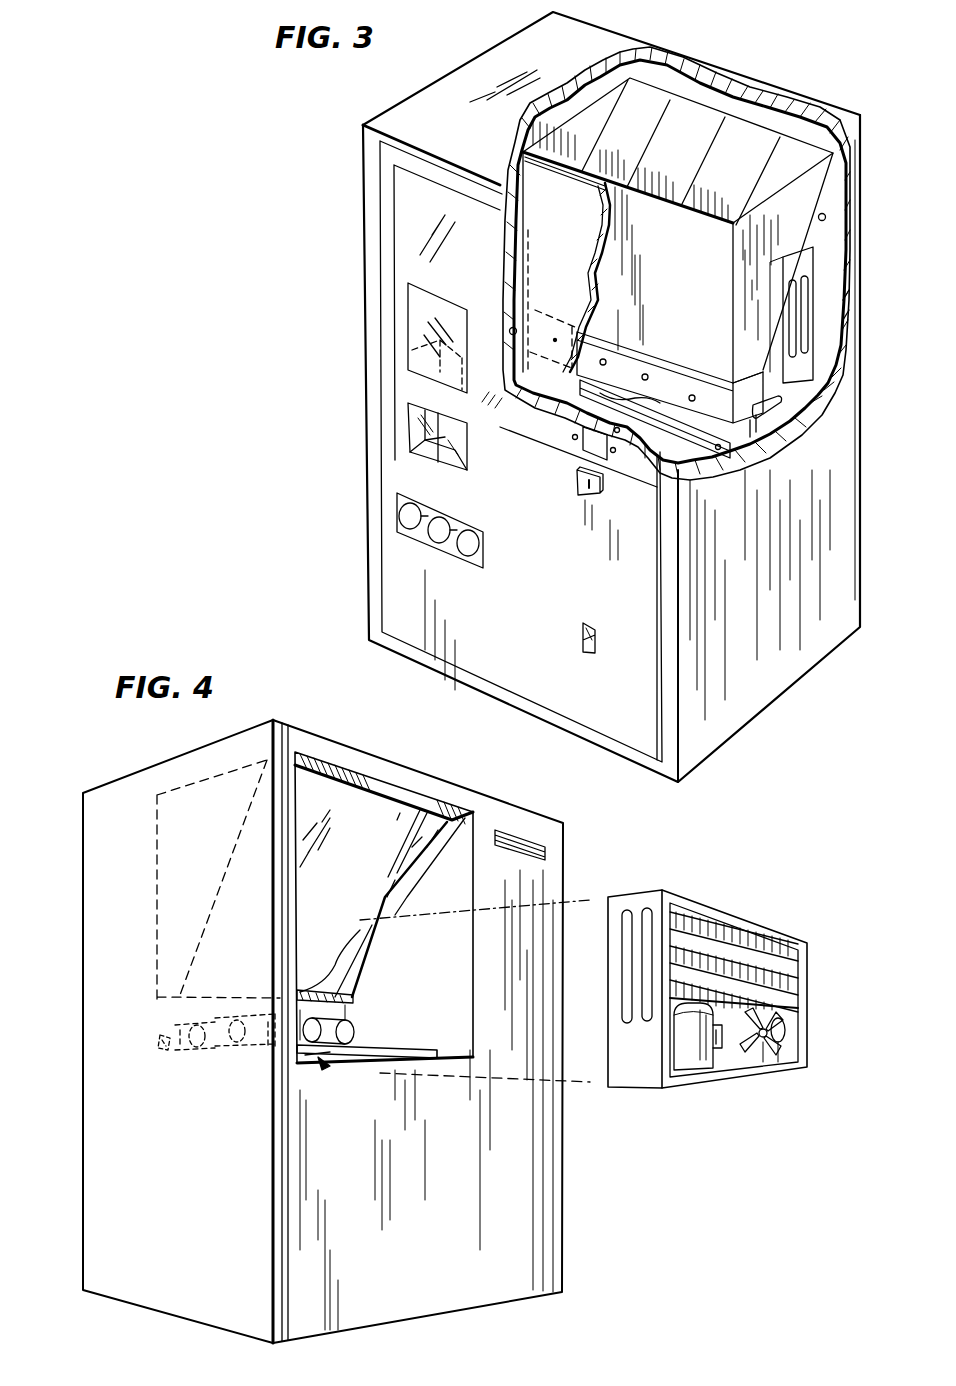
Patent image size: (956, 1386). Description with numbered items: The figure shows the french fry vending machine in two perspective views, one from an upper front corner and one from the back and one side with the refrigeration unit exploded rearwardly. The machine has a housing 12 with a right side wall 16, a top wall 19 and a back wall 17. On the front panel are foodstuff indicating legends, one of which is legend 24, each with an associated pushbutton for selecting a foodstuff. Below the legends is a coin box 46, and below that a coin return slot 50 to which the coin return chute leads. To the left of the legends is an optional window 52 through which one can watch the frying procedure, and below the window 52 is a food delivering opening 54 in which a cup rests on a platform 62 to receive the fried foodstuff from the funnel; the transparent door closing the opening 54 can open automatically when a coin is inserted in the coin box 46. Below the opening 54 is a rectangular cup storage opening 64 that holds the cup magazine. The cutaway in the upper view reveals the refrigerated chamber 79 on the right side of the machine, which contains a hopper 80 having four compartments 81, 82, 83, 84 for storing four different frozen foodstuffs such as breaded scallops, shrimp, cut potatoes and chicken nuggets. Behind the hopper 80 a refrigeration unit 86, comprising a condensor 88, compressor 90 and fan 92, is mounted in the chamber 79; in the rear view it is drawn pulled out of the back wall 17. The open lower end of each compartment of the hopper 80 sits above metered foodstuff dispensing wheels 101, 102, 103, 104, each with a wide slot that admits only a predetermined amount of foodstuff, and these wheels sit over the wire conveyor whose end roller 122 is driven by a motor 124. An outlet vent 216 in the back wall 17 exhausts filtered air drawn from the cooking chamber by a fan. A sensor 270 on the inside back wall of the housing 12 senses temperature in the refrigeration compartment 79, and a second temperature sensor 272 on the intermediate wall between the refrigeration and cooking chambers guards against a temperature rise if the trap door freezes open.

In FIG. 3, the housing 12 is at (770, 700).
In FIG. 3, the right side wall 16 is at (832, 312).
In FIG. 3, the top wall 19 is at (585, 58).
In FIG. 3, the foodstuff indicating legend 24 is at (586, 445).
In FIG. 3, the coin box 46 is at (598, 494).
In FIG. 3, the coin return slot 50 is at (588, 653).
In FIG. 3, the window 52 is at (412, 293).
In FIG. 3, the food delivering opening 54 is at (412, 442).
In FIG. 3, the platform 62 is at (462, 466).
In FIG. 3, the cup storage opening 64 is at (420, 530).
In FIG. 3, the refrigerated chamber 79 is at (813, 244).
In FIG. 4, the refrigerated chamber 79 is at (455, 1033).
In FIG. 3, the hopper 80 is at (760, 345).
In FIG. 4, the hopper 80 is at (153, 849).
In FIG. 3, the compartment 81 is at (640, 93).
In FIG. 3, the compartment 82 is at (688, 116).
In FIG. 3, the compartment 83 is at (737, 140).
In FIG. 3, the compartment 84 is at (790, 157).
In FIG. 3, the sensor 270 is at (826, 217).
In FIG. 3, the temperature sensor 272 is at (516, 330).
In FIG. 4, the back wall 17 is at (523, 1210).
In FIG. 4, the refrigeration unit 86 is at (799, 931).
In FIG. 4, the condensor 88 is at (707, 940).
In FIG. 4, the compressor 90 is at (690, 1050).
In FIG. 4, the fan 92 is at (777, 1043).
In FIG. 4, the metered foodstuff dispensing wheel 101 is at (245, 1055).
In FIG. 4, the metered foodstuff dispensing wheel 102 is at (275, 1057).
In FIG. 4, the metered foodstuff dispensing wheel 103 is at (318, 1035).
In FIG. 4, the metered foodstuff dispensing wheel 104 is at (348, 1031).
In FIG. 4, the conveyor end roller 122 is at (162, 1057).
In FIG. 4, the motor 124 is at (196, 1057).
In FIG. 4, the outlet vent 216 is at (548, 845).